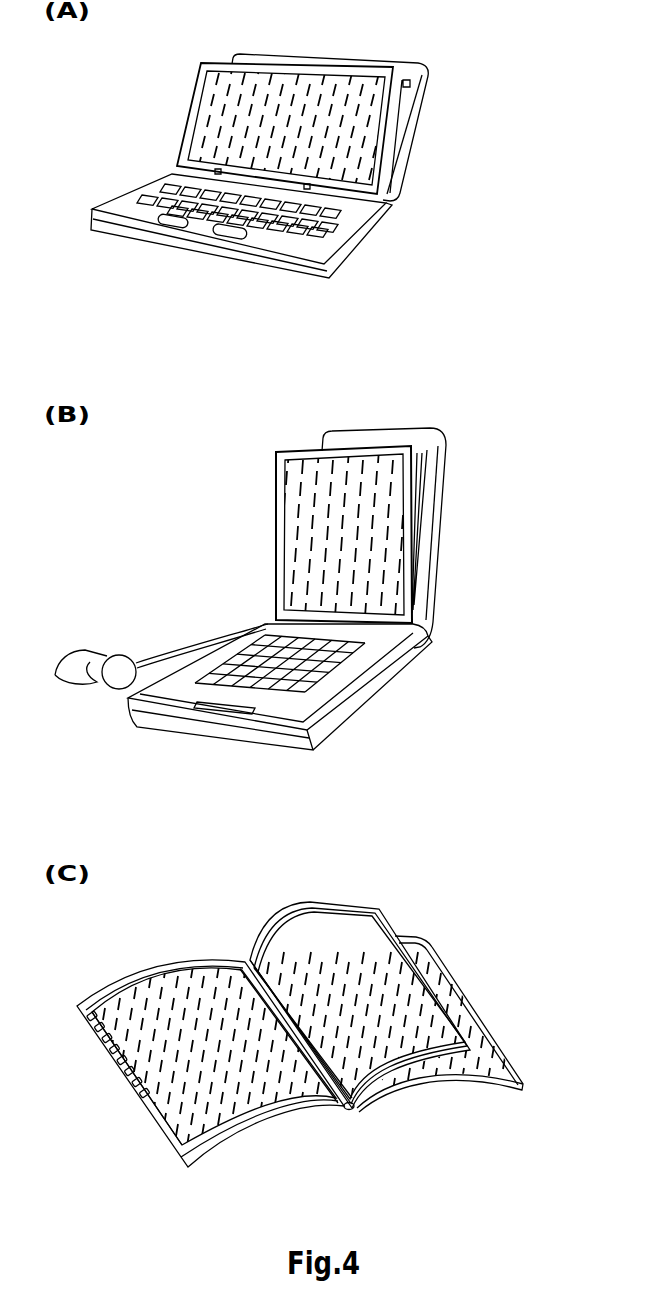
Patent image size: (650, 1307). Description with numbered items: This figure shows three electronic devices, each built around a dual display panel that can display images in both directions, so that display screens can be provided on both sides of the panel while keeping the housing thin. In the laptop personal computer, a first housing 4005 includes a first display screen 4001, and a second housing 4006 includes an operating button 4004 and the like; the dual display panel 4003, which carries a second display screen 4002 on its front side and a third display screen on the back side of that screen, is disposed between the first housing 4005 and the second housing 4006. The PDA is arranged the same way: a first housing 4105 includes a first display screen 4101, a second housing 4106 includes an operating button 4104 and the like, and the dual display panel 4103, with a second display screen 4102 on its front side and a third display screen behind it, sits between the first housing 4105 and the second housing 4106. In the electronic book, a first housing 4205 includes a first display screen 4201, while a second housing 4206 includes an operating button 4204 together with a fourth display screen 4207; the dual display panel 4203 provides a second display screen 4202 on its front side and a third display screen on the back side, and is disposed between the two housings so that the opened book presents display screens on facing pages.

The first display screen 4001 is at (405, 82).
The second display screen 4002 is at (196, 140).
The dual display panel 4003 is at (192, 88).
The operating button 4004 is at (360, 215).
The first housing 4005 is at (400, 152).
The second housing 4006 is at (207, 242).
The first display screen 4101 is at (425, 463).
The second display screen 4102 is at (390, 595).
The dual display panel 4103 is at (290, 447).
The operating button 4104 is at (310, 690).
The first housing 4105 is at (432, 540).
The second housing 4106 is at (250, 640).
The first display screen 4201 is at (478, 1036).
The second display screen 4202 is at (407, 993).
The dual display panel 4203 is at (400, 942).
The operating button 4204 is at (122, 1066).
The first housing 4205 is at (390, 1092).
The second housing 4206 is at (218, 1133).
The fourth display screen 4207 is at (187, 1103).